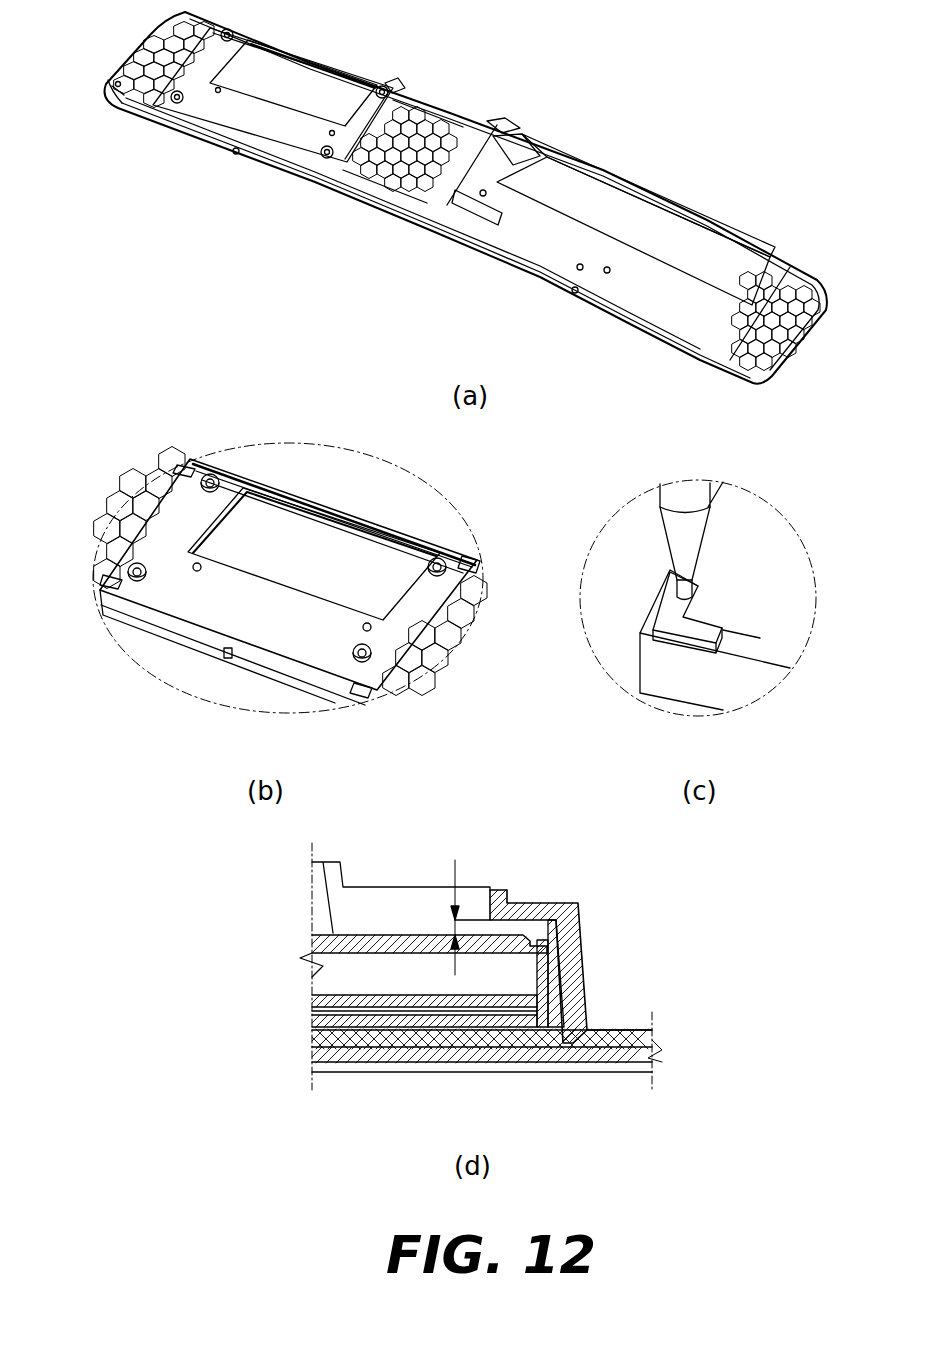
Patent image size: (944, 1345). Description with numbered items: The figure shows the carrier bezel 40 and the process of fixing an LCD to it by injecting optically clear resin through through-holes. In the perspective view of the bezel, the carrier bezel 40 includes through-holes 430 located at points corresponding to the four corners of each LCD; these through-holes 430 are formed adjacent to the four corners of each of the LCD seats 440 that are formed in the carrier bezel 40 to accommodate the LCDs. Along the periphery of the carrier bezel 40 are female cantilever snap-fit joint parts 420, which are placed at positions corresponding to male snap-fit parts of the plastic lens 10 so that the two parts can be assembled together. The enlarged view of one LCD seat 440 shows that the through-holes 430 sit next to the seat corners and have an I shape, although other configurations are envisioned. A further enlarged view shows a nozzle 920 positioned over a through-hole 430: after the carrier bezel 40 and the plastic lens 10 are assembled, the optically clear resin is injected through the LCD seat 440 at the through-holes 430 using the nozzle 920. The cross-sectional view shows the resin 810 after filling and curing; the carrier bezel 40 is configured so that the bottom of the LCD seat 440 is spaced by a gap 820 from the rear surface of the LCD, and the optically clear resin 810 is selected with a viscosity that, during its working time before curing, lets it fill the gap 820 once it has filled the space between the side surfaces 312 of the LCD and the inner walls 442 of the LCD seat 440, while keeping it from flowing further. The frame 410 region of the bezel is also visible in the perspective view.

The carrier bezel 40 is at (481, 213).
The frame 410 is at (453, 108).
The female cantilever snap-fit joint parts 420 is at (235, 155).
The through-holes 430 is at (394, 84).
The LCD seats 440 is at (185, 602).
The nozzle 920 is at (664, 524).
The gaps 820 is at (457, 872).
The optically clear resin 810 is at (553, 930).
The inner walls 442 is at (568, 945).
The side surfaces 312 is at (545, 1024).
The plastic lens 10 is at (578, 1062).